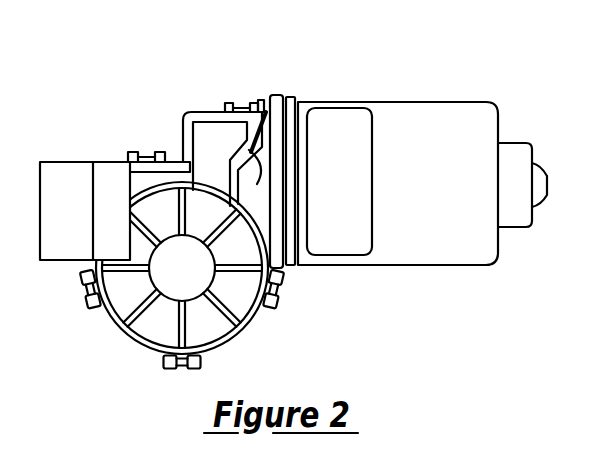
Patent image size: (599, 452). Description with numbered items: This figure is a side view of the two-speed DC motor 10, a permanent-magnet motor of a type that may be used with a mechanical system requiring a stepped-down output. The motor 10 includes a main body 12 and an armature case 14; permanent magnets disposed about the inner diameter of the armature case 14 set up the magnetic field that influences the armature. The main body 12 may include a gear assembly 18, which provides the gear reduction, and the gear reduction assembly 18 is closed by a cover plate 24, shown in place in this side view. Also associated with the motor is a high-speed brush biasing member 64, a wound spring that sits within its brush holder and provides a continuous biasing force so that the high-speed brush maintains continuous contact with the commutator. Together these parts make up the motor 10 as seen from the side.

The two-speed DC motor 10 is at (290, 204).
The main body 12 is at (210, 110).
The armature case 14 is at (413, 102).
The gear assembly 18 is at (94, 338).
The cover plate 24 is at (257, 321).
The high-speed brush biasing member 64 is at (60, 162).